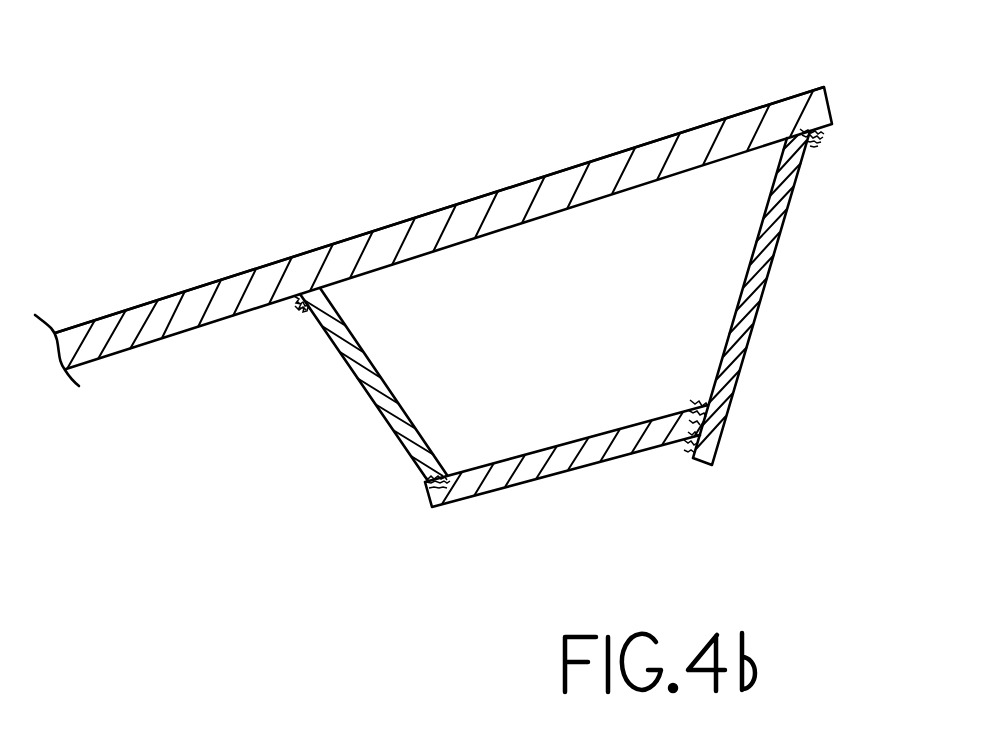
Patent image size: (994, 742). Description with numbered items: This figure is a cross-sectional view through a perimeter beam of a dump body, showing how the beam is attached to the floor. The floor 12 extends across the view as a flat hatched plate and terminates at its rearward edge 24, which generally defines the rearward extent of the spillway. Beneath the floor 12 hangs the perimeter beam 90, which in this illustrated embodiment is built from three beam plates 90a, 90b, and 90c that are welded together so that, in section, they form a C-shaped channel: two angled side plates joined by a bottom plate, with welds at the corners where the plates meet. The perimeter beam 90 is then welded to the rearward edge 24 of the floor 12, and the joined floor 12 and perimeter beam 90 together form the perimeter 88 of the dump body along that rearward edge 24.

The floor 12 is at (278, 242).
The rearward edge 24 is at (713, 122).
The perimeter 88 is at (600, 336).
The perimeter beam 90 is at (585, 336).
The beam plate 90a is at (380, 402).
The beam plate 90b is at (583, 467).
The beam plate 90c is at (740, 343).